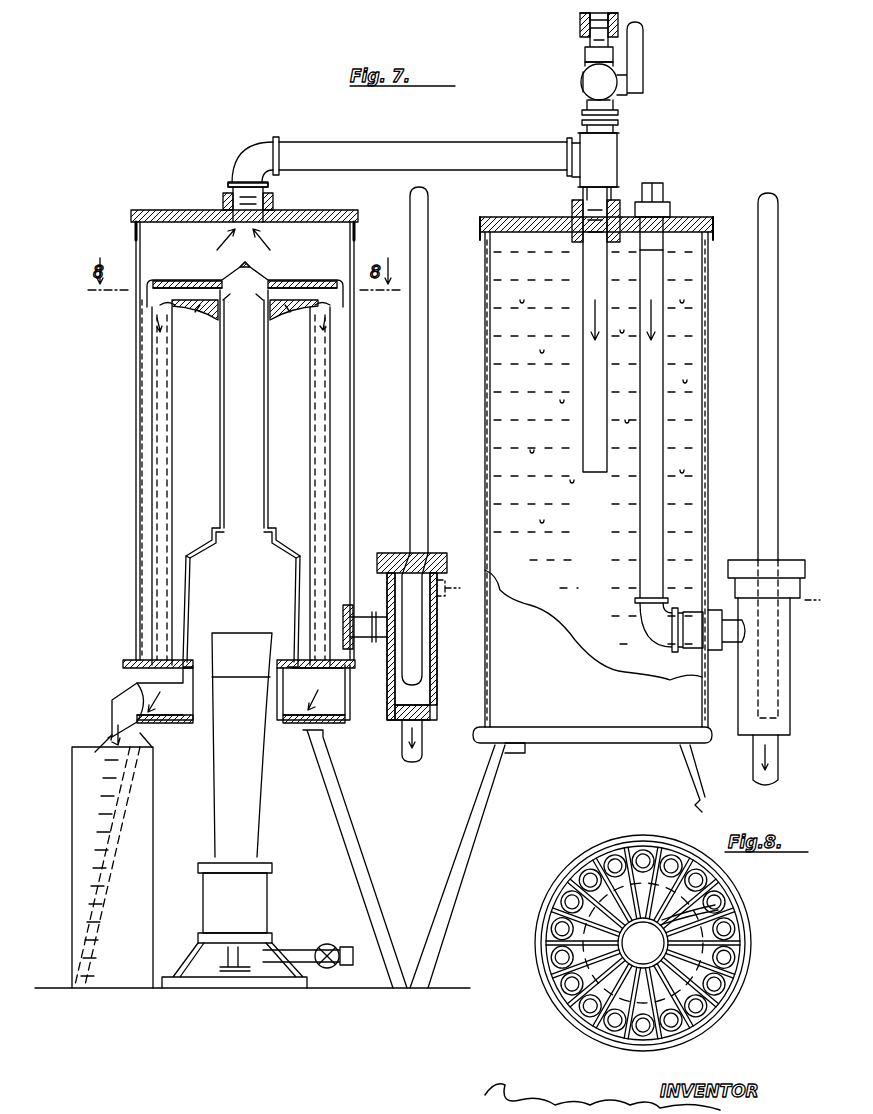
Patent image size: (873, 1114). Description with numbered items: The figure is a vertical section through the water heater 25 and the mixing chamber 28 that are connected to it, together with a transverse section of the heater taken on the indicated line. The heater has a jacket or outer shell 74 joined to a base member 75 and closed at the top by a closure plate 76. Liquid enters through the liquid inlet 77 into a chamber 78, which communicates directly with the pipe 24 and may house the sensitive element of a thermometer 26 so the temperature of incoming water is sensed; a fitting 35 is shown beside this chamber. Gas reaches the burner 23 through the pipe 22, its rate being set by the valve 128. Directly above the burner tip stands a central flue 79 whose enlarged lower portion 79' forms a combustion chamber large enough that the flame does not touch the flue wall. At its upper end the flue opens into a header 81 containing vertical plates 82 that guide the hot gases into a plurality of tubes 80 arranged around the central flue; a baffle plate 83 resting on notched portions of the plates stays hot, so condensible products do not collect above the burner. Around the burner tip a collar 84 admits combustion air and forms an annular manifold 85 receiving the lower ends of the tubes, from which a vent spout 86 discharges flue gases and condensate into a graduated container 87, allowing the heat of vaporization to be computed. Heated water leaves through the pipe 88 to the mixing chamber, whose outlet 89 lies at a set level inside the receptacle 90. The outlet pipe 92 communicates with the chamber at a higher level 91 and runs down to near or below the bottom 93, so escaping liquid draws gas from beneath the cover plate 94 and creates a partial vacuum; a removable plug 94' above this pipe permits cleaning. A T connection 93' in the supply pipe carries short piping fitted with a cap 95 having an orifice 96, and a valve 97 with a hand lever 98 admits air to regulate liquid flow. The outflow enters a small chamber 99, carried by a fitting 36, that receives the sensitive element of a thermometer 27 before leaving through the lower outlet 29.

In FIG. 7, the pipe 22 is at (295, 945).
In FIG. 7, the burner 23 is at (228, 780).
In FIG. 7, the pipe 24 is at (420, 745).
In FIG. 7, the water heater 25 is at (133, 440).
In FIG. 7, the thermometer 26 is at (428, 450).
In FIG. 7, the thermometer 27 is at (770, 455).
In FIG. 7, the mixing chamber 28 is at (715, 294).
In FIG. 7, the outlet 29 is at (752, 766).
In FIG. 7, the fitting 35 is at (445, 592).
In FIG. 7, the fitting 36 is at (790, 562).
In FIG. 7, the jacket 74 is at (136, 532).
In FIG. 7, the base member 75 is at (126, 663).
In FIG. 7, the closure plate 76 is at (178, 212).
In FIG. 7, the liquid inlet 77 is at (372, 610).
In FIG. 7, the chamber 78 is at (437, 658).
In FIG. 7, the central flue 79 is at (260, 409).
In FIG. 8, the central flue 79 is at (643, 943).
In FIG. 7, the enlarged lower portion 79' is at (239, 589).
In FIG. 8, the enlarged lower portion 79' is at (621, 943).
In FIG. 7, the tubes 80 is at (172, 360).
In FIG. 8, the tubes 80 is at (658, 850).
In FIG. 7, the header 81 is at (190, 284).
In FIG. 7, the vertical plates 82 is at (210, 312).
In FIG. 8, the vertical plates 82 is at (705, 920).
In FIG. 7, the baffle plate 83 is at (248, 288).
In FIG. 7, the collar 84 is at (188, 722).
In FIG. 7, the annular channel 85 is at (338, 715).
In FIG. 7, the vent spout 86 is at (112, 705).
In FIG. 7, the graduated container 87 is at (75, 826).
In FIG. 7, the pipe 88 is at (466, 150).
In FIG. 7, the outlet 89 is at (583, 408).
In FIG. 7, the receptacle 90 is at (486, 322).
In FIG. 7, the outlet 91 is at (660, 250).
In FIG. 7, the outlet pipe 92 is at (655, 440).
In FIG. 7, the bottom 93 is at (561, 857).
In FIG. 7, the T connection 93' is at (615, 150).
In FIG. 7, the plate 94 is at (596, 214).
In FIG. 7, the removable plug 94' is at (670, 183).
In FIG. 7, the cap 95 is at (620, 18).
In FIG. 7, the orifice 96 is at (592, 14).
In FIG. 7, the valve 97 is at (592, 88).
In FIG. 7, the hand lever 98 is at (648, 52).
In FIG. 7, the small chamber 99 is at (745, 709).
In FIG. 7, the valve 128 is at (233, 970).